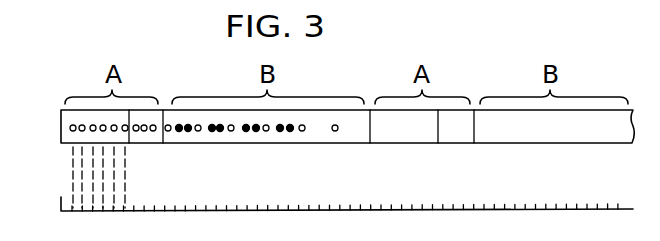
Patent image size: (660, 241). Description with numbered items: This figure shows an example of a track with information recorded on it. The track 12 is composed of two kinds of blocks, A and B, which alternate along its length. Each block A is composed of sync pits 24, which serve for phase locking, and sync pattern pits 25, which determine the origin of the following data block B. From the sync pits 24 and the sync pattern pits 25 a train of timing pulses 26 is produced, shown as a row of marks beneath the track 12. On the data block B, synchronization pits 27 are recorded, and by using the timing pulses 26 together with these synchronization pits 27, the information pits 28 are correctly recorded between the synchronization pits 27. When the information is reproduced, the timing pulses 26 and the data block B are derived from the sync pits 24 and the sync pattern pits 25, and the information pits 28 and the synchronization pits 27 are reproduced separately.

The track 12 is at (330, 126).
The sync pits 24 is at (72, 131).
The sync pattern pits 25 is at (143, 132).
The timing pulses 26 is at (329, 209).
The synchronization pits 27 is at (335, 132).
The information pits 28 is at (188, 132).